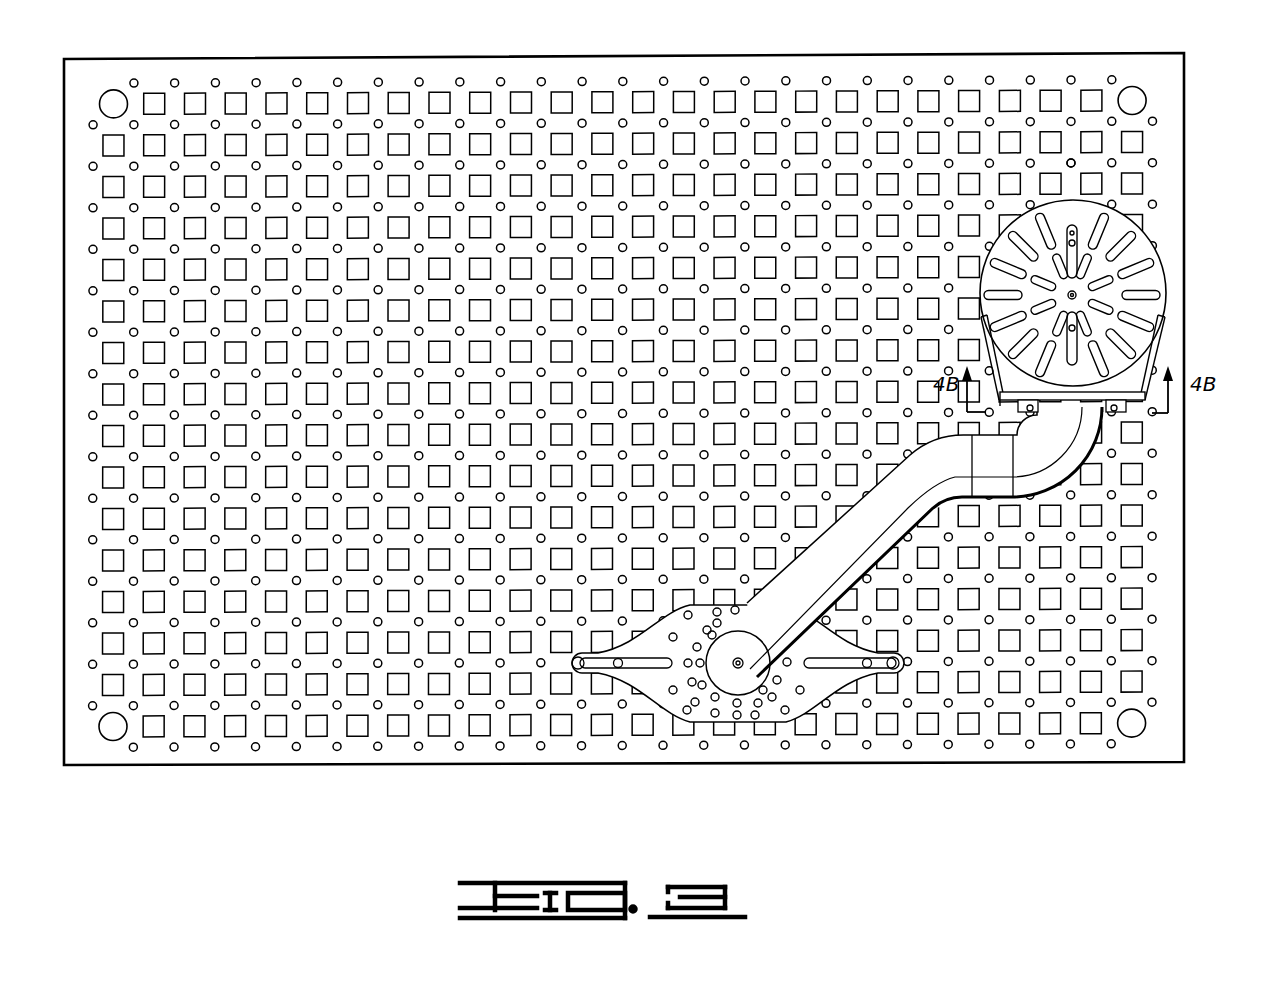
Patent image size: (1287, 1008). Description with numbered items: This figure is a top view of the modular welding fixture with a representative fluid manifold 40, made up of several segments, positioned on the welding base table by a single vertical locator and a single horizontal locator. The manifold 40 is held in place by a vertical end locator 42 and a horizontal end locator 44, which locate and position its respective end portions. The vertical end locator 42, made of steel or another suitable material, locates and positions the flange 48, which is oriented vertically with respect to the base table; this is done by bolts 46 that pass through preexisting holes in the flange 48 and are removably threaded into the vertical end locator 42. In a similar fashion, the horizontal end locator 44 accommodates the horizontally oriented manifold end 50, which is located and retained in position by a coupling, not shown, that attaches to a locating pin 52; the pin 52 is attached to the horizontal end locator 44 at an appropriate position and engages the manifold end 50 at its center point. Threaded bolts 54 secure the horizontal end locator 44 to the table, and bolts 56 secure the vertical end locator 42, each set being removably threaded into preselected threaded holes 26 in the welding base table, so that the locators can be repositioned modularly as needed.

The threaded holes 26 is at (1090, 153).
The fluid manifold 40 is at (868, 550).
The vertical end locator 42 is at (1165, 344).
The horizontal end locator 44 is at (790, 729).
The bolts 46 is at (1038, 416).
The flange 48 is at (1118, 413).
The manifold end 50 is at (818, 48).
The locating pin 52 is at (741, 672).
The threaded bolts 54 is at (867, 670).
The bolts 56 is at (1078, 246).